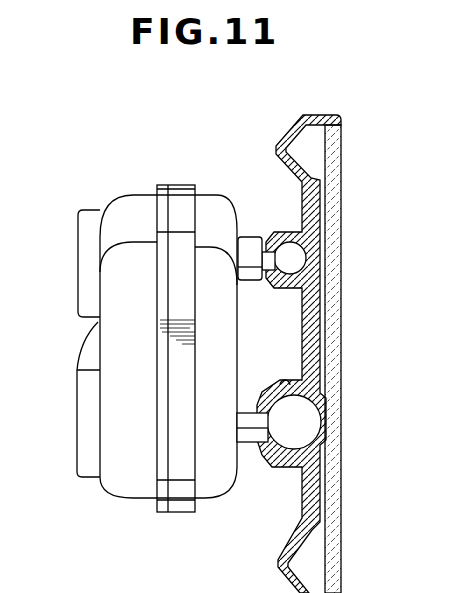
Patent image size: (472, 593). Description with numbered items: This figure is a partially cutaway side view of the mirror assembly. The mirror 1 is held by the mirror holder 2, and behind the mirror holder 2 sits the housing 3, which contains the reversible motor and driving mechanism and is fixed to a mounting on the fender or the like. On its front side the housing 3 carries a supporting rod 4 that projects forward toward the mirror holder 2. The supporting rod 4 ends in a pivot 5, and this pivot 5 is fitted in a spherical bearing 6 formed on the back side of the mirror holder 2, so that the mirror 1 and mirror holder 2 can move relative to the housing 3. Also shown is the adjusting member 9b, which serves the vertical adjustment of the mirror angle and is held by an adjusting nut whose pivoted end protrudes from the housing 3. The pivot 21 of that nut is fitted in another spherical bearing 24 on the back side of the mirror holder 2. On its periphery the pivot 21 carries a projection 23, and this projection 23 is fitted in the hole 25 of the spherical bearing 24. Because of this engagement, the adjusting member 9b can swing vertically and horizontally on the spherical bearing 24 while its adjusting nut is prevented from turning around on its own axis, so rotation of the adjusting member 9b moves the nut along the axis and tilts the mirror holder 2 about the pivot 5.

The mirror 1 is at (342, 284).
The mirror holder 2 is at (288, 140).
The housing 3 is at (116, 421).
The supporting rod 4 is at (262, 462).
The pivot 5 is at (326, 396).
The spherical bearing 6 is at (324, 439).
The adjusting member 9b is at (243, 236).
The pivot 21 is at (306, 247).
The projection 23 is at (303, 219).
The spherical bearing 24 is at (297, 283).
The hole 25 is at (276, 232).